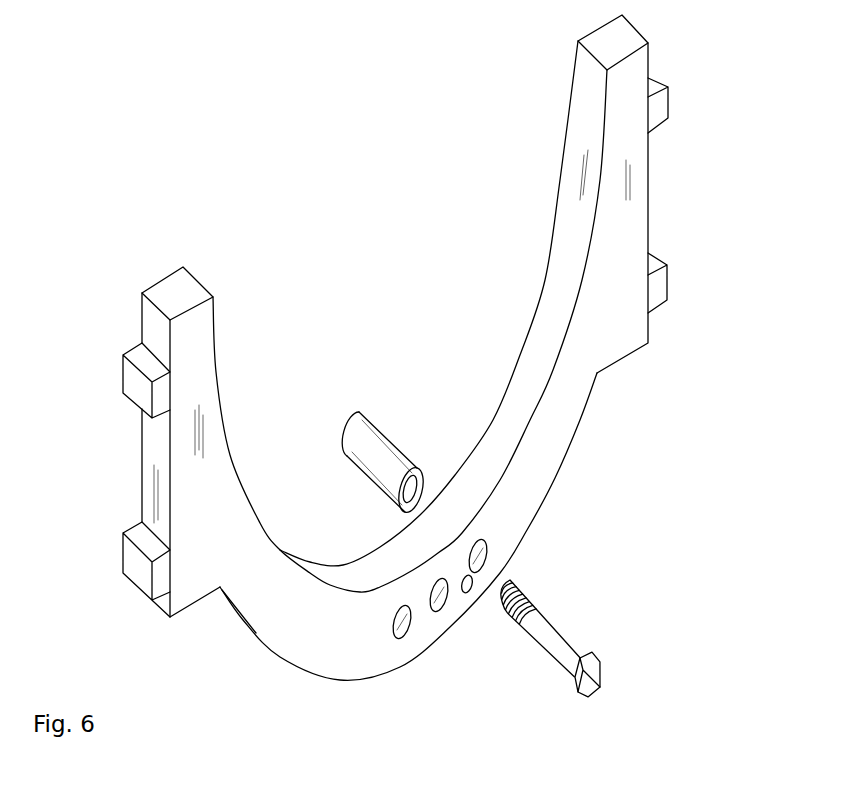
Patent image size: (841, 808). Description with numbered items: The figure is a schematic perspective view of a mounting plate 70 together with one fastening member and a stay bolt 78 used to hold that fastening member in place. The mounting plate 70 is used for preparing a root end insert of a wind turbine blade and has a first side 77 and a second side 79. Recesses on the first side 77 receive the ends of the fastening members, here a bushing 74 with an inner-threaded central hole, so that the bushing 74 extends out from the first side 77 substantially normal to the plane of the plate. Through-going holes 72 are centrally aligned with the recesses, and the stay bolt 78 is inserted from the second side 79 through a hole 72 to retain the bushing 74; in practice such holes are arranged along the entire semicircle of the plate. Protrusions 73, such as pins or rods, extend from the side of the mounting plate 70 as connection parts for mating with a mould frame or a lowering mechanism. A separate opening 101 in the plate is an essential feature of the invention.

The mounting plate 70 is at (432, 346).
The through-going holes 72 is at (481, 553).
The protrusions 73 is at (660, 110).
The bushing 74 is at (380, 438).
The first side 77 is at (523, 340).
The stay bolt 78 is at (557, 637).
The second side 79 is at (565, 423).
The separate opening 101 is at (467, 592).